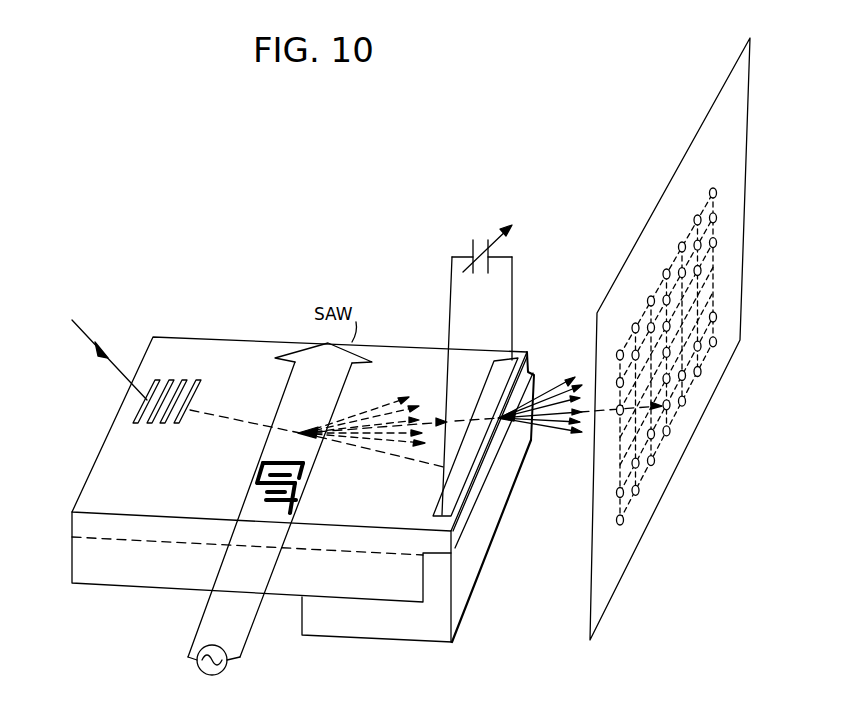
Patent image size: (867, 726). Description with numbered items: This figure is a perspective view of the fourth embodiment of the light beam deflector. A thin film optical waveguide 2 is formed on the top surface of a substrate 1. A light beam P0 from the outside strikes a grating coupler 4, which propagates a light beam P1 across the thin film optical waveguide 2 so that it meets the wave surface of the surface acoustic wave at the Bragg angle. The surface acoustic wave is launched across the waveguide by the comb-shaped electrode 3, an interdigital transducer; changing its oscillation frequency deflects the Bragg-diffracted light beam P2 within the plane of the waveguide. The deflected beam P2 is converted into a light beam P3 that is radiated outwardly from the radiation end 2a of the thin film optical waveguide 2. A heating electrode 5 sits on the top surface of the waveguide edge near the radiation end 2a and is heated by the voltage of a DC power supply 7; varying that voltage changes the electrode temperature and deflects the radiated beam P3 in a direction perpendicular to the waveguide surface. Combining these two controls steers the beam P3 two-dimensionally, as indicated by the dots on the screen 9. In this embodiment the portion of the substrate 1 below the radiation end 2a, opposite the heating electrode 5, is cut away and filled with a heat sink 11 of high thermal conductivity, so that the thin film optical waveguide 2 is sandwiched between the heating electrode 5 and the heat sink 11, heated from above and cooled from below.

The substrate 1 is at (157, 578).
The thin film optical waveguide 2 is at (72, 522).
The radiation end 2a is at (485, 468).
The comb-shaped electrode (interdigital transducer, IDT) 3 is at (255, 487).
The grating coupler 4 is at (180, 380).
The heating electrode 5 is at (490, 373).
The DC power supply 7 is at (482, 240).
The screen 9 is at (625, 553).
The heat sink 11 is at (407, 628).
The light beam from the outside P0 is at (87, 333).
The light beam propagating across the waveguide P1 is at (232, 420).
The Bragg-diffracted light beam P2 is at (383, 405).
The radiated light beam P3 is at (549, 386).